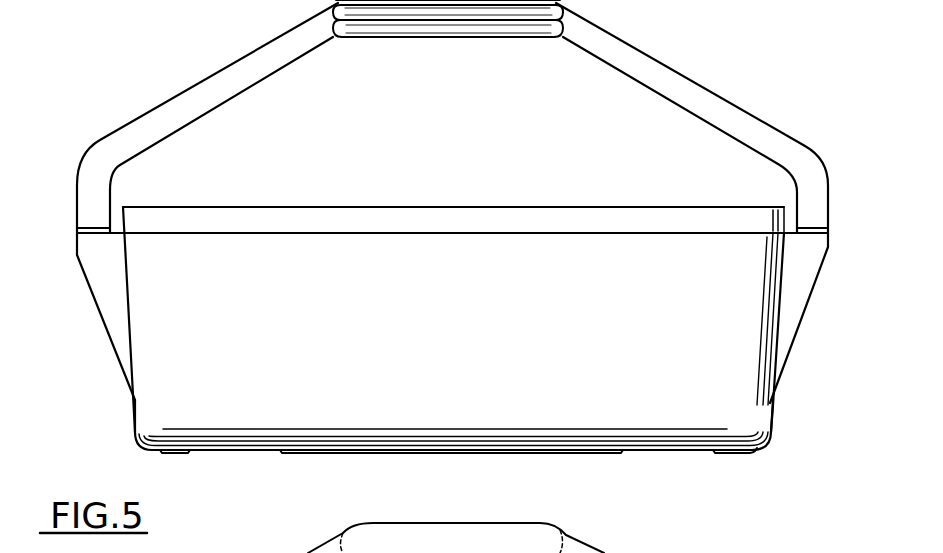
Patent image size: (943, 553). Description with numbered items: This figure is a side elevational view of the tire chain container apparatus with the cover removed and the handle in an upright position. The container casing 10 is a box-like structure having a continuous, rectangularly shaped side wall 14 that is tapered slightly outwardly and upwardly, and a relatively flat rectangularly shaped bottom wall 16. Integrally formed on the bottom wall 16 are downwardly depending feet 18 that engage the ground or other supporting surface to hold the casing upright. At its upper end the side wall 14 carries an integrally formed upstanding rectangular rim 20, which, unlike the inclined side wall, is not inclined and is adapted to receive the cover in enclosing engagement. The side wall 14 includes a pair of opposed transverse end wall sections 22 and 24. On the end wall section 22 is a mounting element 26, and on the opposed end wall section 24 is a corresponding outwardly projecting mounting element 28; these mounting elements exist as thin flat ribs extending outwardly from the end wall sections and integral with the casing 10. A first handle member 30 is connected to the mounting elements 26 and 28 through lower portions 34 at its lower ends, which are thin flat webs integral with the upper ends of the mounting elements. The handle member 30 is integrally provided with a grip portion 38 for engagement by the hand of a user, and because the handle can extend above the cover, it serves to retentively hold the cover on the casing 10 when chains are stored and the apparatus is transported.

The container casing 10 is at (312, 178).
The side wall 14 is at (400, 258).
The bottom wall 16 is at (245, 450).
The feet 18 is at (175, 452).
The rim 20 is at (538, 213).
The end wall section 22 is at (133, 414).
The end wall section 24 is at (773, 412).
The mounting element 26 is at (100, 270).
The mounting element 28 is at (805, 283).
The first handle member 30 is at (690, 90).
The lower portion 34 is at (100, 228).
The grip portion 38 is at (471, 22).